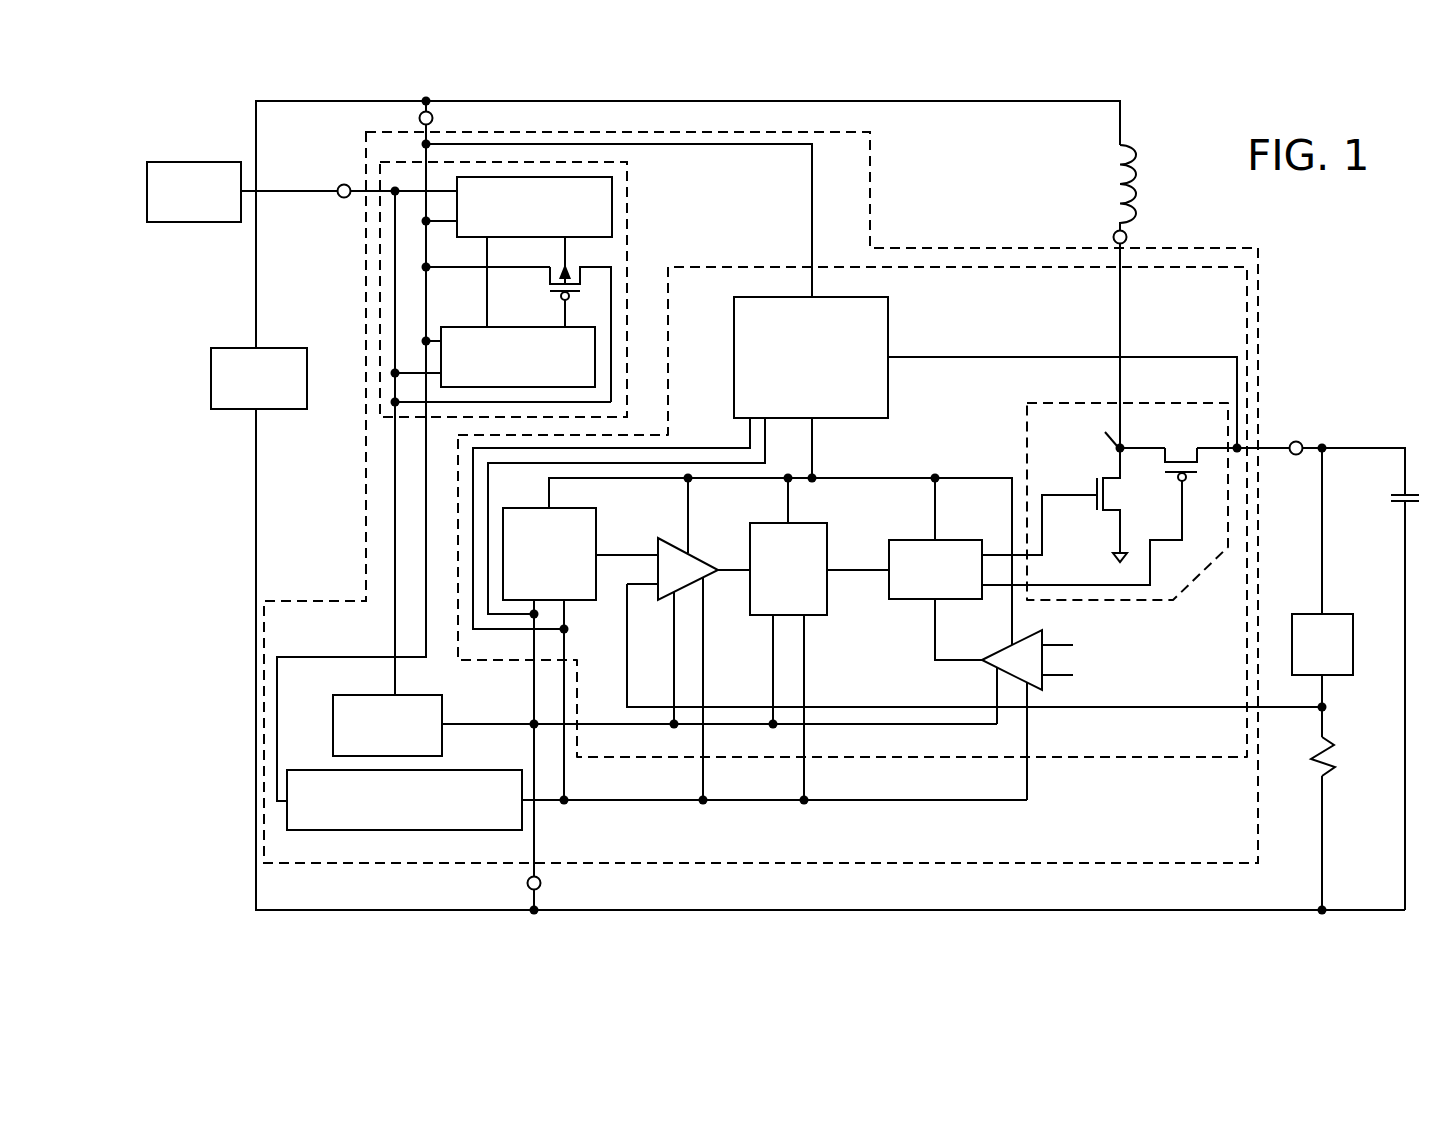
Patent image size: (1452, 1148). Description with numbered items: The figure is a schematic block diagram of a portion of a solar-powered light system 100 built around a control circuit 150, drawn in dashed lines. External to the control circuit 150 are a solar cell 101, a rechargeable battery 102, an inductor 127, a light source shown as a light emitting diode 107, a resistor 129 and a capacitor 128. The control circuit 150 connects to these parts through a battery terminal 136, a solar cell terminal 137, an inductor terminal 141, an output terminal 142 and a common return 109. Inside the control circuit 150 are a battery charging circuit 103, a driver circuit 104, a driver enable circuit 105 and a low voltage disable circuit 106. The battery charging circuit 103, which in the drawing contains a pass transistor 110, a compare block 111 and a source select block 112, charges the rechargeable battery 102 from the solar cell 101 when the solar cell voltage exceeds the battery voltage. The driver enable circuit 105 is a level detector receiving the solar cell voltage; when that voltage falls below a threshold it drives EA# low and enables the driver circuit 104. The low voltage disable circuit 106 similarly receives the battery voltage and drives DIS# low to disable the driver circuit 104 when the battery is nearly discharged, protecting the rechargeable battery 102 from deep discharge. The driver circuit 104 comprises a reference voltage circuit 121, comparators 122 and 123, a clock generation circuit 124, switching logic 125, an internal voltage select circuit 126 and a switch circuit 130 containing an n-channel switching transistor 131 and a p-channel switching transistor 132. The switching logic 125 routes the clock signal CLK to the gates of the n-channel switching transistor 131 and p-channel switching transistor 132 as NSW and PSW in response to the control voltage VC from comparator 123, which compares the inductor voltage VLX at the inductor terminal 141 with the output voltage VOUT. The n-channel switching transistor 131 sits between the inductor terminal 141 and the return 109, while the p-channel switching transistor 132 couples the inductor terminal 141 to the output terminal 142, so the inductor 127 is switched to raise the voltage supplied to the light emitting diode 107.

The solar-powered light system 100 is at (1304, 207).
The solar cell 101 is at (226, 223).
The rechargeable battery 102 is at (241, 410).
The battery charging circuit 103 is at (628, 204).
The driver circuit 104 is at (722, 266).
The driver enable circuit 105 is at (418, 694).
The low voltage disable circuit 106 is at (388, 825).
The light emitting diode 107 is at (1305, 671).
The common return terminal 109 is at (541, 886).
The pass transistor 110 is at (547, 277).
The compare circuit 111 is at (502, 382).
The source select circuit 112 is at (563, 231).
The reference voltage circuit 121 is at (532, 586).
The comparator 122 is at (695, 563).
The comparator 123 is at (1002, 655).
The clock generation circuit 124 is at (772, 605).
The switching logic 125 is at (918, 593).
The internal voltage select circuit 126 is at (794, 405).
The inductor 127 is at (1136, 213).
The capacitor 128 is at (1397, 506).
The resistor 129 is at (1313, 777).
The switch circuit 130 is at (1170, 405).
The n-channel switching transistor 131 is at (1110, 512).
The p-channel switching transistor 132 is at (1167, 456).
The battery terminal 136 is at (419, 118).
The solar cell terminal 137 is at (341, 198).
The inductor terminal 141 is at (1127, 237).
The output terminal 142 is at (1299, 442).
The control circuit 150 is at (957, 247).